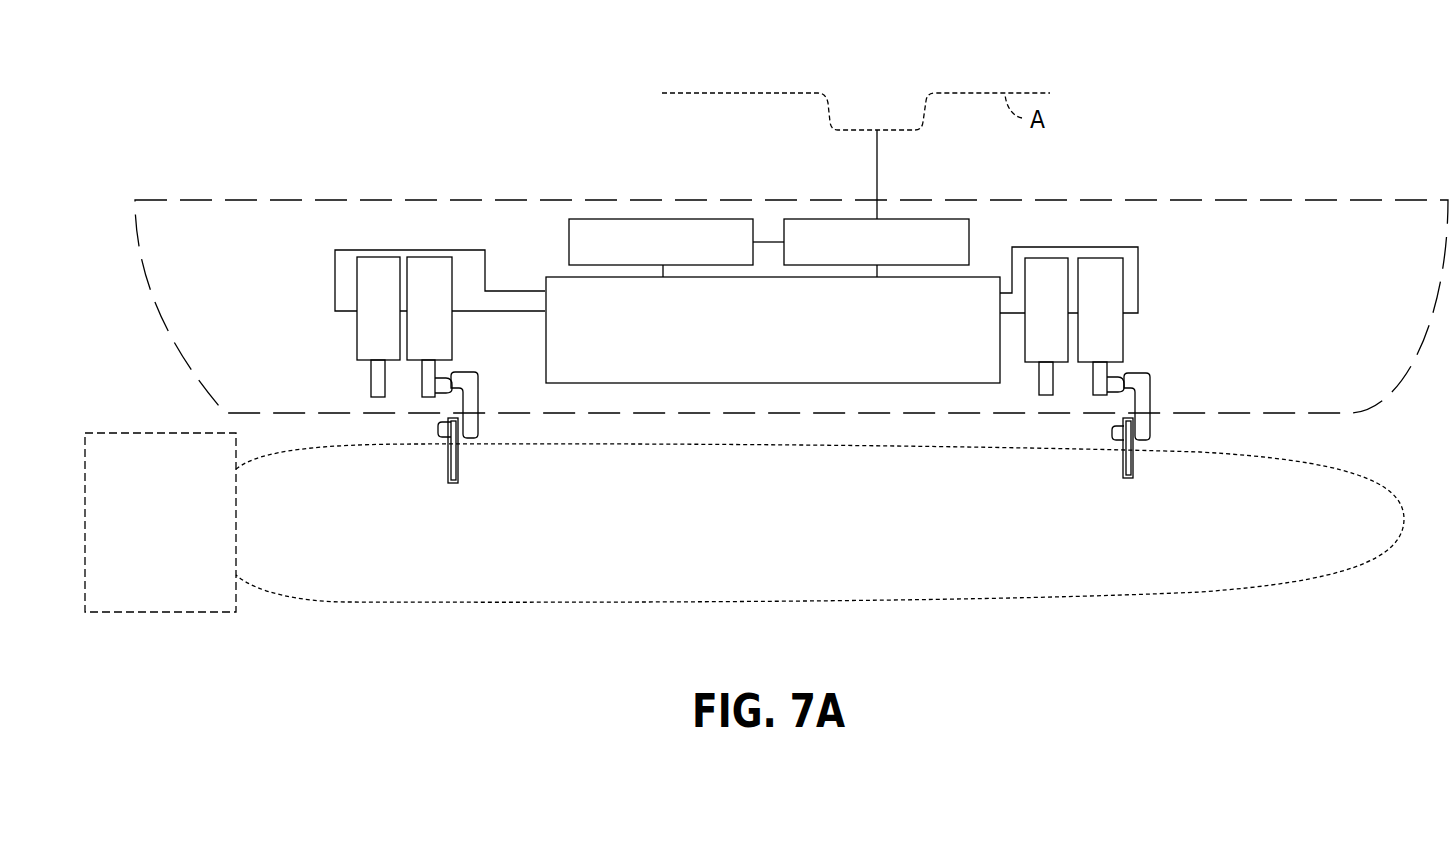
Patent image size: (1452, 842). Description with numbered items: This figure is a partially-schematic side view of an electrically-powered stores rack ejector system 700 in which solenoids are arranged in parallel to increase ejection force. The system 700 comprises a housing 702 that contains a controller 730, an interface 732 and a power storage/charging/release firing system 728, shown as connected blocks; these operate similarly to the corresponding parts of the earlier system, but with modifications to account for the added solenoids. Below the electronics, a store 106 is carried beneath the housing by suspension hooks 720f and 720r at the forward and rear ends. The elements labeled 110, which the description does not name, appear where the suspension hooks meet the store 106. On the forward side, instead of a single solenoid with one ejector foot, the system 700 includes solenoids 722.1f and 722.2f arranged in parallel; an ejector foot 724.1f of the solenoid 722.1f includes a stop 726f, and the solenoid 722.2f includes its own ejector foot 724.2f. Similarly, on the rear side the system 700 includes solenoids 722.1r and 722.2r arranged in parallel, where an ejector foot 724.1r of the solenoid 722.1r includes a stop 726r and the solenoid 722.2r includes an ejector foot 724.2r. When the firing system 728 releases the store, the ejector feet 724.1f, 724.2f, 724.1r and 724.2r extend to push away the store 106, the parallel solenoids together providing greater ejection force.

The electrically-powered stores rack ejector system 700 is at (523, 153).
The housing 702 is at (1252, 200).
The store 106 is at (620, 600).
The release pin 110 is at (453, 487).
The power storage/charging/release firing system 728 is at (825, 383).
The controller 730 is at (728, 219).
The interface 732 is at (952, 218).
The solenoid 722.2r is at (357, 342).
The solenoid 722.1r is at (452, 328).
The ejector foot 724.2r is at (372, 380).
The ejector foot 724.1r is at (433, 396).
The stop 726r is at (443, 392).
The suspension hook 720r is at (480, 432).
The solenoid 722.2f is at (1040, 258).
The solenoid 722.1f is at (1123, 318).
The ejector foot 724.2f is at (1048, 395).
The ejector foot 724.1f is at (1108, 374).
The stop 726f is at (1115, 392).
The suspension hook 720f is at (1150, 437).